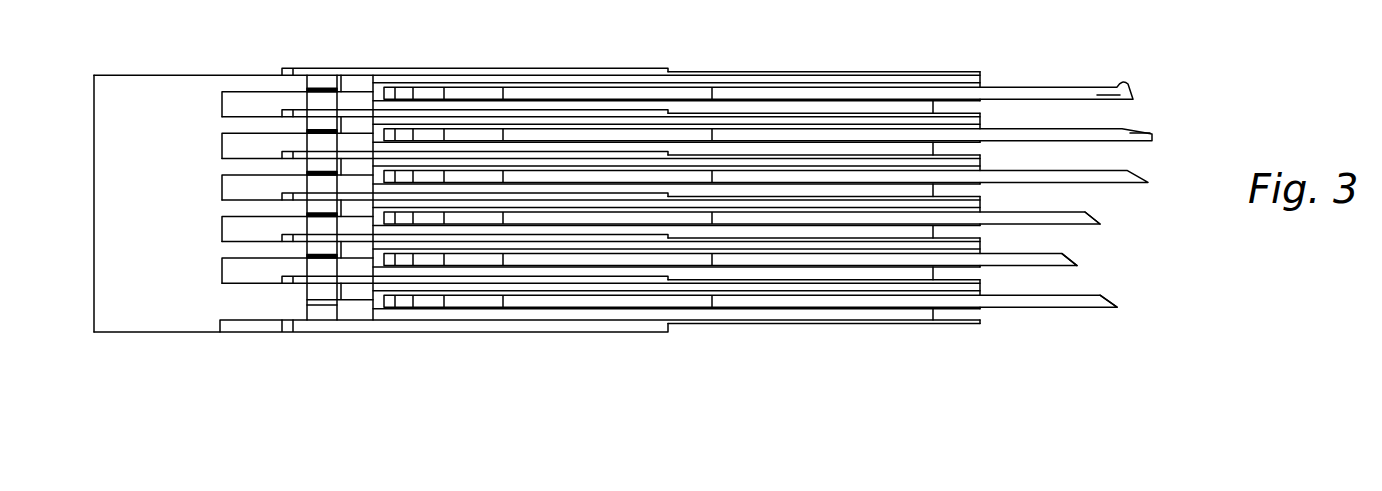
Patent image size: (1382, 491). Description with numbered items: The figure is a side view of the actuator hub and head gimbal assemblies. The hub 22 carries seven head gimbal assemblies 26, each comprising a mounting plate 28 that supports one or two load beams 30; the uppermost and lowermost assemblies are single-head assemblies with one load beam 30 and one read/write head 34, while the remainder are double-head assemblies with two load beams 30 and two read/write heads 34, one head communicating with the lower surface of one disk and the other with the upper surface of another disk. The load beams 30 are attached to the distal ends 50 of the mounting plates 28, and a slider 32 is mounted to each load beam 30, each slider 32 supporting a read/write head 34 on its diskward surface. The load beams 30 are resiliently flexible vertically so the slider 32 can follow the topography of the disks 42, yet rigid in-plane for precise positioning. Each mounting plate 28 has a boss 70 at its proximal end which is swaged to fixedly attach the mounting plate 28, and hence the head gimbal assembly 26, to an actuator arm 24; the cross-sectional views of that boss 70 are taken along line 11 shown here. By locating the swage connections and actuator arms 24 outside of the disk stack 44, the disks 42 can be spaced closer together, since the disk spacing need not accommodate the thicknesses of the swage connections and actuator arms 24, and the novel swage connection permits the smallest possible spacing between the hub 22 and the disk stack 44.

The hub 22 is at (149, 75).
The actuator arm 24 is at (247, 167).
The line 11 is at (323, 283).
The boss 70 is at (321, 128).
The mounting plate 28 is at (418, 110).
The distal end 50 is at (630, 112).
The head gimbal assembly 26 is at (712, 10).
The load beam 30 is at (835, 120).
The read/write head 34 is at (943, 134).
The slider 32 is at (985, 125).
The disk 42 is at (1150, 134).
The disk stack 44 is at (1175, 258).